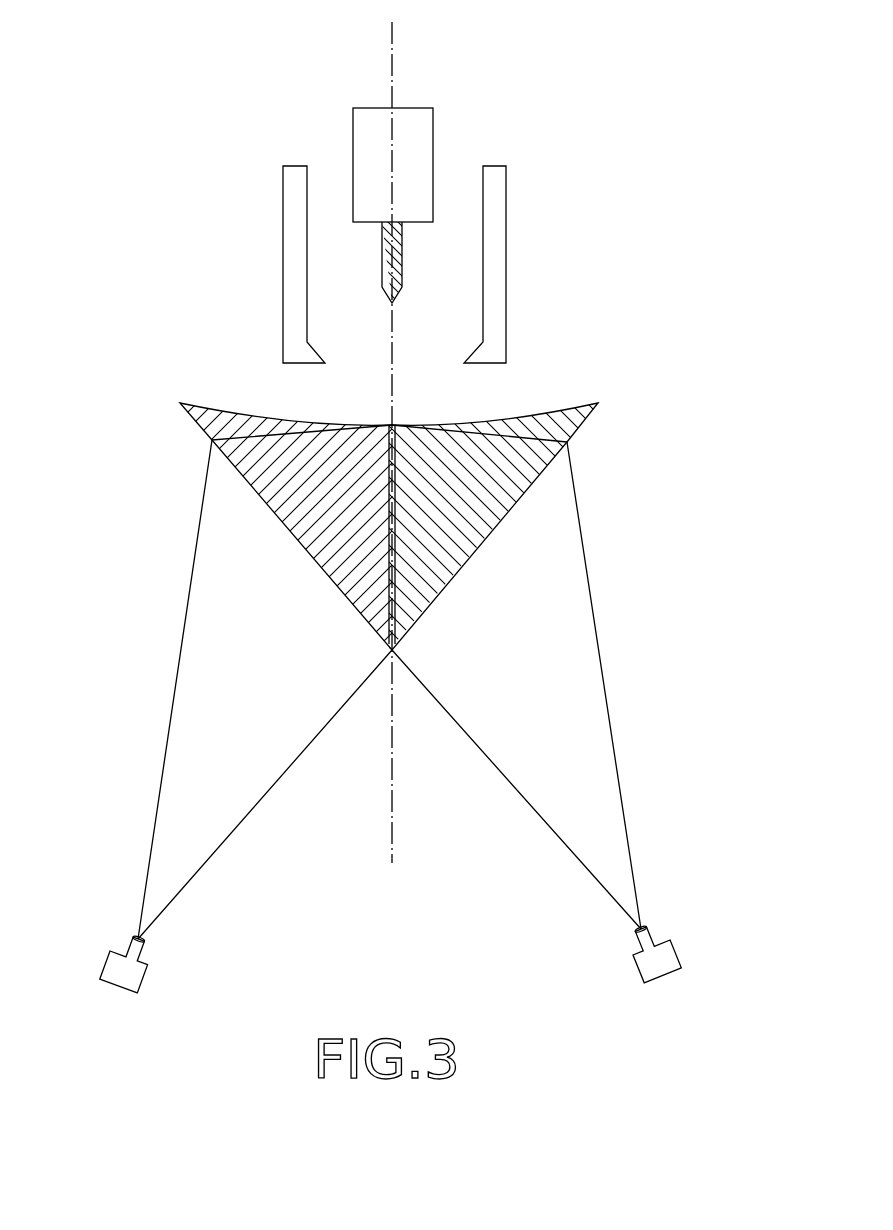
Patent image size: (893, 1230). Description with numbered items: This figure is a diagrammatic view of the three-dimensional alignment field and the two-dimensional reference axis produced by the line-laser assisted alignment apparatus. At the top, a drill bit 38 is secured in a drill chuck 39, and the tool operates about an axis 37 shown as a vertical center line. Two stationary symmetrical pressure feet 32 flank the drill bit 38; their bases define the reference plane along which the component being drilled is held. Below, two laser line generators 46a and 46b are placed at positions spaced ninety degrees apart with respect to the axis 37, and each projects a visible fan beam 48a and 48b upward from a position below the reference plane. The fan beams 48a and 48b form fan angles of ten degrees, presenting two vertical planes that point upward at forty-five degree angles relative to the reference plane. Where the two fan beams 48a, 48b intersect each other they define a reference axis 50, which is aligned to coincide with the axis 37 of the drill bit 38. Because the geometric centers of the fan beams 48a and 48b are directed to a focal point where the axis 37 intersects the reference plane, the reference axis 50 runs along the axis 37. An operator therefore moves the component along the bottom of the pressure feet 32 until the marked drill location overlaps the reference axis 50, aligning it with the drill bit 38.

The axis 37 is at (394, 56).
The drill chuck 39 is at (436, 135).
The drill bit 38 is at (400, 262).
The pressure feet 32 is at (507, 245).
The reference axis 50 is at (398, 473).
The fan beam 48a is at (188, 592).
The fan beam 48b is at (591, 592).
The laser line generator 46a is at (681, 958).
The laser line generator 46b is at (107, 957).